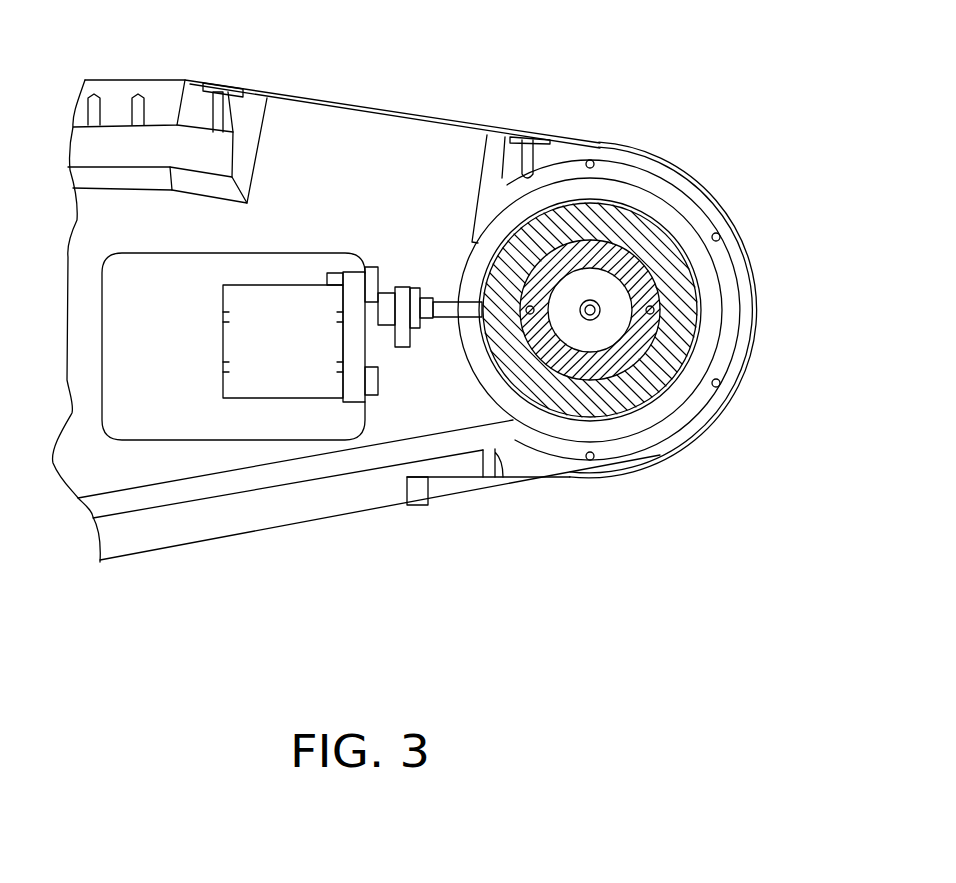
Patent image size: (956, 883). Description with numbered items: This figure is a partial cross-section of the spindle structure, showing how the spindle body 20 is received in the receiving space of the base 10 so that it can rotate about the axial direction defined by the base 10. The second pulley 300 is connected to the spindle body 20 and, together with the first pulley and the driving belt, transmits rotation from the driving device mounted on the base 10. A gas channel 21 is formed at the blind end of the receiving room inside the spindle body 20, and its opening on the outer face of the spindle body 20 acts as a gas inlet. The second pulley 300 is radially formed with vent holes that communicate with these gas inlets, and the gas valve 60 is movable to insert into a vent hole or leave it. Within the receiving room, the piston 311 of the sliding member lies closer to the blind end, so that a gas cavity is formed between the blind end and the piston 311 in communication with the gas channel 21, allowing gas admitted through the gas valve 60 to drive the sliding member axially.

The base 10 is at (347, 104).
The spindle body 20 is at (612, 245).
The gas channel 21 is at (537, 306).
The gas valve 60 is at (453, 308).
The second pulley 300 is at (655, 358).
The piston 311 is at (620, 302).